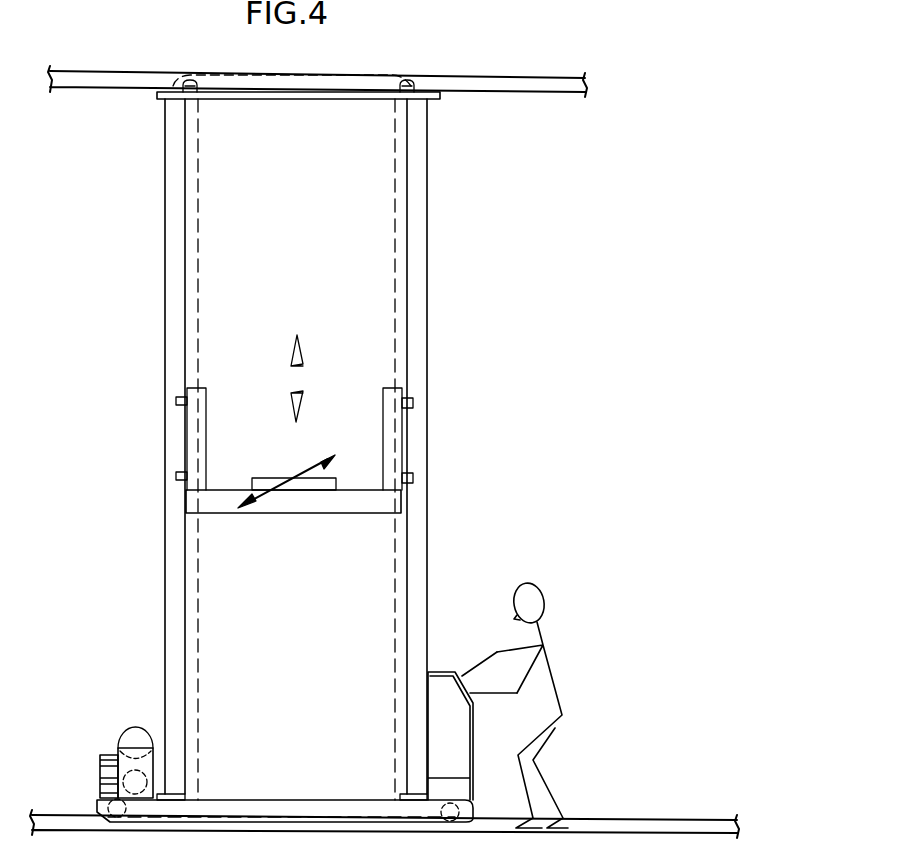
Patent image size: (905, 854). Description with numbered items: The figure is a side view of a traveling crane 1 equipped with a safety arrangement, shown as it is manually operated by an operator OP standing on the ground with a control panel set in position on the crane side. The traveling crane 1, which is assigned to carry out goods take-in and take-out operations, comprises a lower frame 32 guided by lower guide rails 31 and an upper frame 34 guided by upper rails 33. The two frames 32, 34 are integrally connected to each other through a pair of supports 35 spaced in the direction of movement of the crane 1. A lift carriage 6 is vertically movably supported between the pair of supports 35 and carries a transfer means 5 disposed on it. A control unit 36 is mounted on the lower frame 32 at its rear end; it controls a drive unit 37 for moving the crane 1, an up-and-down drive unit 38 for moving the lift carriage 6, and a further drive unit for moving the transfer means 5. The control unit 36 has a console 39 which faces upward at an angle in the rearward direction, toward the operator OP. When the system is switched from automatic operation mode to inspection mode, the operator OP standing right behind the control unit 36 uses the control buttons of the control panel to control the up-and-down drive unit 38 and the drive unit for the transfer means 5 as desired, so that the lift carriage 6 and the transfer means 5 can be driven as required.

The traveling crane 1 is at (154, 304).
The transfer means 5 is at (262, 488).
The lift carriage 6 is at (303, 500).
The lower guide rails 31 is at (60, 818).
The lower frame 32 is at (282, 808).
The upper rails 33 is at (513, 93).
The upper frame 34 is at (287, 100).
The supports 35 is at (175, 353).
The control unit 36 is at (445, 738).
The drive unit 37 is at (108, 762).
The up-and-down drive unit 38 is at (134, 740).
The console 39 is at (485, 685).
The operator OP is at (553, 680).